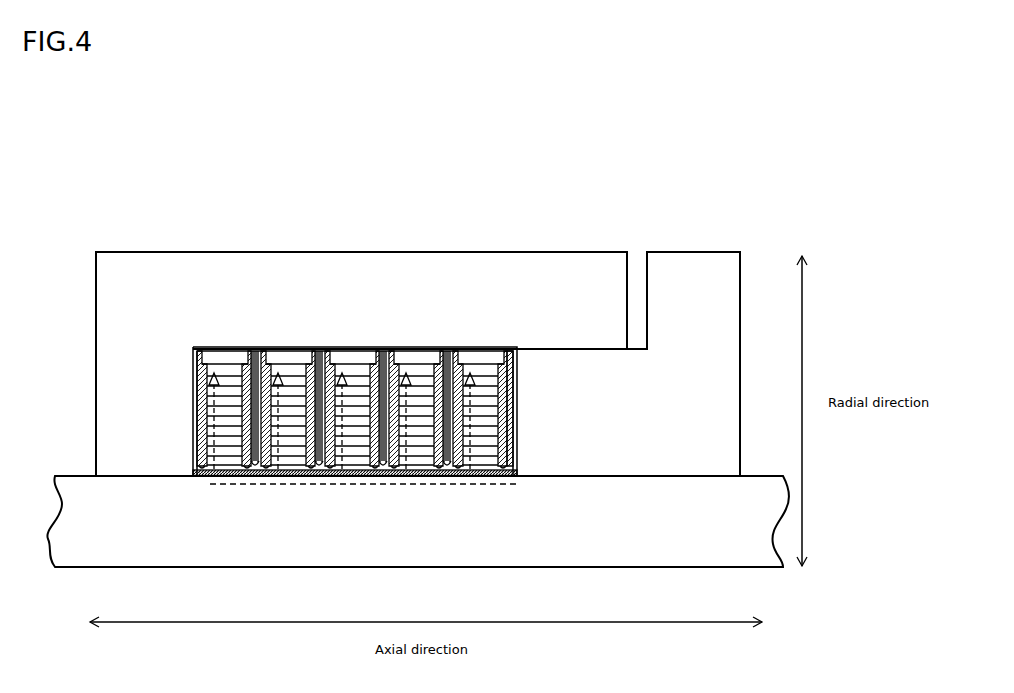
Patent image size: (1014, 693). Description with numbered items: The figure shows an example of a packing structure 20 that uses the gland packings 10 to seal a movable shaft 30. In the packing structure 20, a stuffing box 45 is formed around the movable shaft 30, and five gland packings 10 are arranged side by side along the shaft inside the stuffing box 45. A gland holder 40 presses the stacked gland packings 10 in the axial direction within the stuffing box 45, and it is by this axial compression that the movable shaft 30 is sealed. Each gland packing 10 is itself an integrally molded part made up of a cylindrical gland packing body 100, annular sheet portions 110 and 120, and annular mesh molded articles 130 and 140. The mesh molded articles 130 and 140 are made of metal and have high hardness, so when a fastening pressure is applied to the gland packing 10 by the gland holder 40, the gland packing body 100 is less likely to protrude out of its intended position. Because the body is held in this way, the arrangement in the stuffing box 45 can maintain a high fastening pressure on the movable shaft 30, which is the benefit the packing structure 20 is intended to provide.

The gland packing 10 is at (312, 405).
The packing structure 20 is at (433, 226).
The movable shaft 30 is at (87, 568).
The gland holder 40 is at (673, 253).
The stuffing box 45 is at (95, 374).
The gland packing body 100 is at (225, 478).
The annular sheet portion 110 is at (243, 478).
The annular sheet portion 120 is at (207, 478).
The annular mesh molded article 130 is at (254, 478).
The annular mesh molded article 140 is at (197, 478).